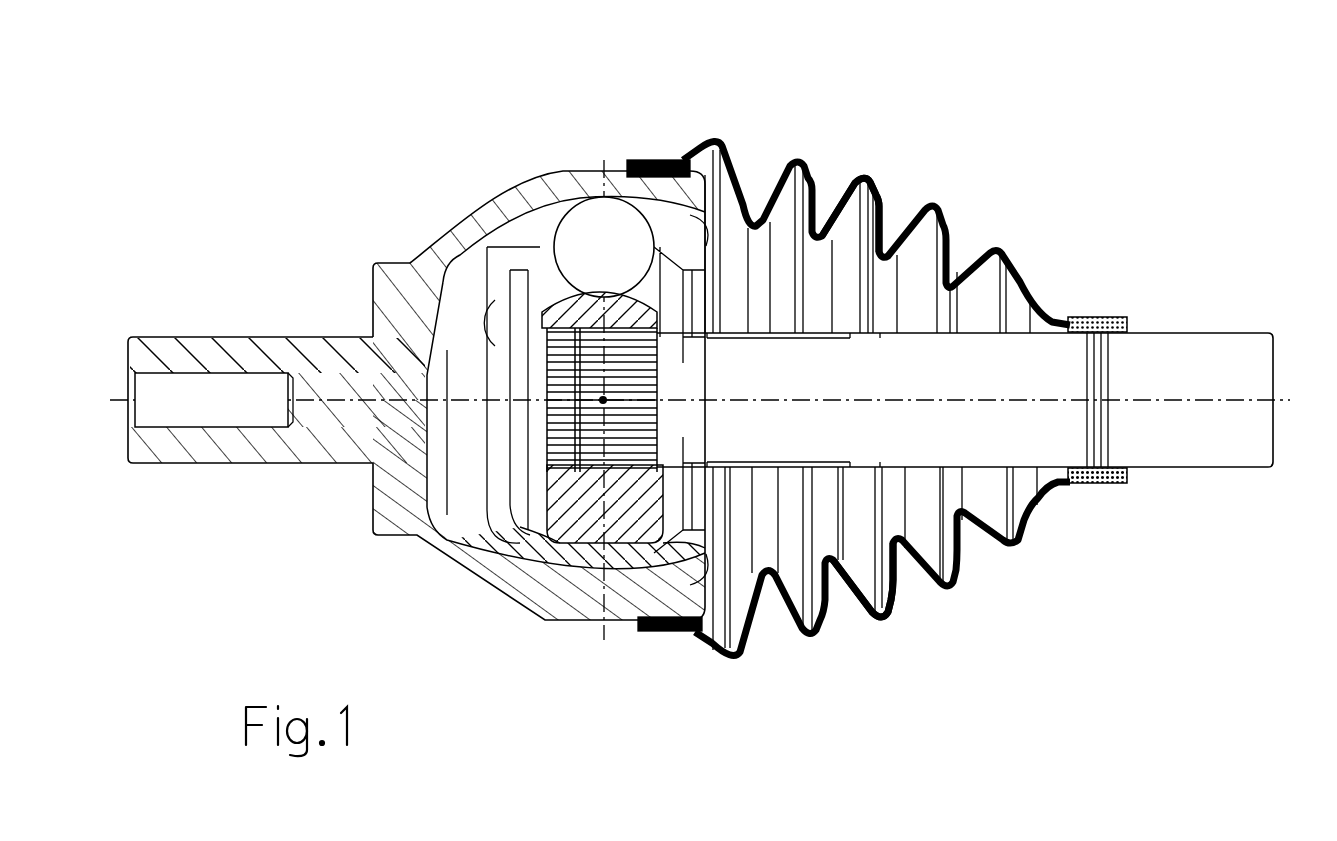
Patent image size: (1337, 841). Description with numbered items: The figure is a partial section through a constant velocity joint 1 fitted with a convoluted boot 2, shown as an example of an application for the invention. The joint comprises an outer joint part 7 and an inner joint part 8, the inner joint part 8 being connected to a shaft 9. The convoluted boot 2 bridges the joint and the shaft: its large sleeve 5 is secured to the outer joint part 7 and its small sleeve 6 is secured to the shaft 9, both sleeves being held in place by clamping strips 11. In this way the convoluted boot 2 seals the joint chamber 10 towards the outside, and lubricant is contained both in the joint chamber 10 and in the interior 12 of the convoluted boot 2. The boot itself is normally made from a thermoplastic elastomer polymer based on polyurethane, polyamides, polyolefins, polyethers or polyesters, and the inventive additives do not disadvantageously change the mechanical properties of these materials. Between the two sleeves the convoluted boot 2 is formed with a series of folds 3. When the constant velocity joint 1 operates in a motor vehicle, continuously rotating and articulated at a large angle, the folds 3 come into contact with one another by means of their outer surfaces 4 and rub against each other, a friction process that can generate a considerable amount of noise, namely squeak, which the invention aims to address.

The constant velocity joint 1 is at (373, 268).
The convoluted boot 2 is at (790, 163).
The folds 3 is at (880, 177).
The outer surfaces 4 is at (755, 630).
The large sleeve 5 is at (652, 163).
The small sleeve 6 is at (1097, 330).
The outer joint part 7 is at (538, 197).
The inner joint part 8 is at (570, 313).
The shaft 9 is at (1203, 367).
The joint chamber 10 is at (693, 233).
The clamping strips 11 is at (665, 637).
The interior of the convoluted boot 12 is at (877, 620).